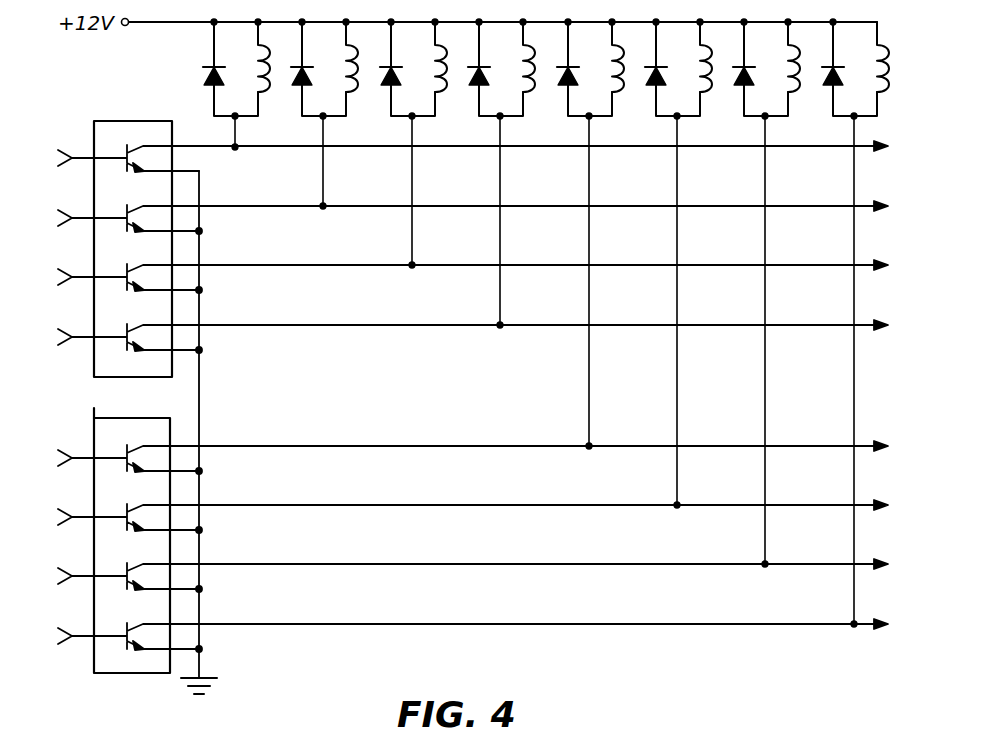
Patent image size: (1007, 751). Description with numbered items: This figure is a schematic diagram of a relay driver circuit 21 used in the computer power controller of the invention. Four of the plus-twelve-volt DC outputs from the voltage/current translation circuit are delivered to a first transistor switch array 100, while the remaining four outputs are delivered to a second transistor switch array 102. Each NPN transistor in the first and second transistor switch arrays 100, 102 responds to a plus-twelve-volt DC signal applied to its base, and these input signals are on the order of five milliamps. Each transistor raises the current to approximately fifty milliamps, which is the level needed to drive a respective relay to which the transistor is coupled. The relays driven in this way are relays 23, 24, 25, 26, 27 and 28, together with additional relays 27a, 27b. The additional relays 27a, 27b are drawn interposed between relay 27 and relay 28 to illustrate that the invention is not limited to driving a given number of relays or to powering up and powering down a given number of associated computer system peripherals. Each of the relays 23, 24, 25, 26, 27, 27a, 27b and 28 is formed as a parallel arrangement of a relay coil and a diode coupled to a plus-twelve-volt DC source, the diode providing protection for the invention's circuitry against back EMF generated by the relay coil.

The relay driver circuit 21 is at (702, 648).
The relay 23 is at (246, 111).
The relay 24 is at (334, 111).
The relay 25 is at (423, 111).
The relay 26 is at (511, 111).
The relay 27 is at (600, 111).
The additional relay 27a is at (692, 111).
The additional relay 27b is at (780, 111).
The relay 28 is at (865, 111).
The first transistor switch array 100 is at (160, 120).
The second transistor switch array 102 is at (150, 678).